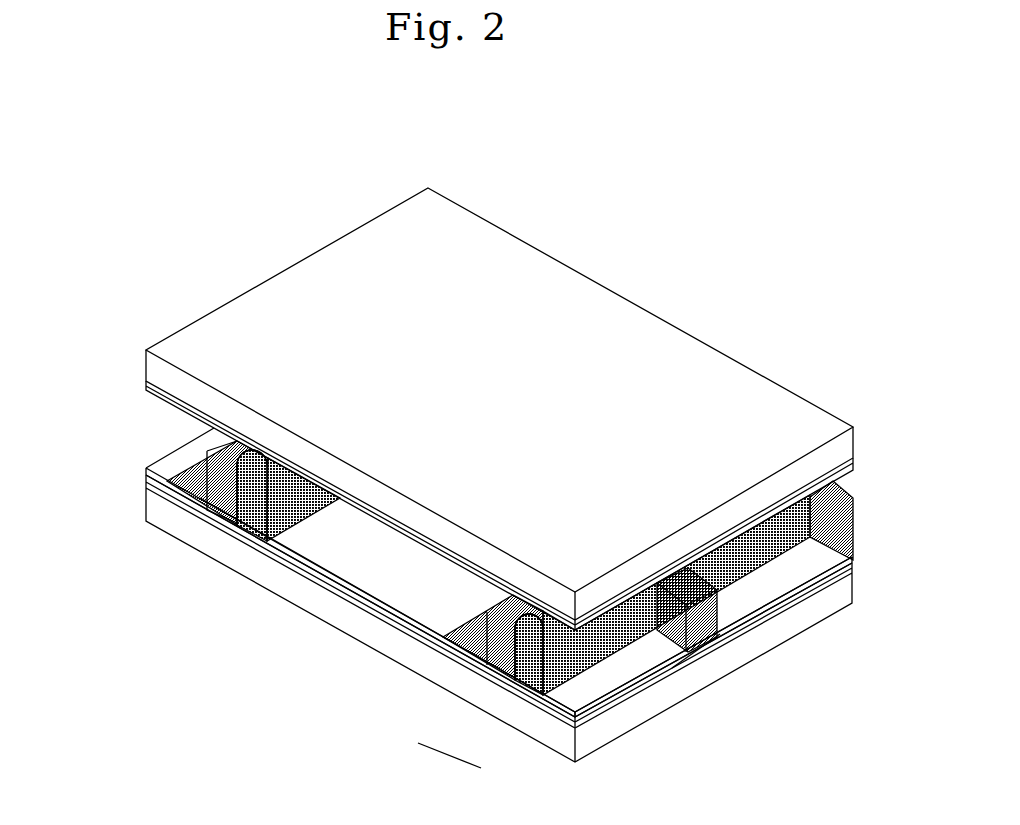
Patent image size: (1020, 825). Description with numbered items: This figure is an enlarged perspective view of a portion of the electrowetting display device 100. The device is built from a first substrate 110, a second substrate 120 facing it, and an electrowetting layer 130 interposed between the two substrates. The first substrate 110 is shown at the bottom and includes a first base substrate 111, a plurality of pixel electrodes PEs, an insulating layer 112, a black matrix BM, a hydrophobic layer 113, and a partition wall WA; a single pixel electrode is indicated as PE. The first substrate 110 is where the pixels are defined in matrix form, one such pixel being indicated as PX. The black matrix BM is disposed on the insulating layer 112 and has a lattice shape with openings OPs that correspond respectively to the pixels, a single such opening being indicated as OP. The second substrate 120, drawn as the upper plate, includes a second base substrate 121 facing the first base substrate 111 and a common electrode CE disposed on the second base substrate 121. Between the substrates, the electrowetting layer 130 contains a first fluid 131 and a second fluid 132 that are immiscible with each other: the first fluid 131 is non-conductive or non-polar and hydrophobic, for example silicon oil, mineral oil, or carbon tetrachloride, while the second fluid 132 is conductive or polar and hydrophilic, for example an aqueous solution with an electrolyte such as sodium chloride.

The electrowetting display device 100 is at (690, 165).
The second substrate 120 is at (82, 346).
The second base substrate 121 is at (145, 372).
The common electrode CE is at (145, 392).
The electrowetting layer 130 is at (82, 433).
The first fluid 131 is at (146, 487).
The second fluid 132 is at (172, 441).
The first substrate 110 is at (98, 572).
The first base substrate 111 is at (335, 612).
The insulating layer 112 is at (262, 548).
The hydrophobic layer 113 is at (405, 619).
The pixel electrode PE is at (312, 583).
The pixel electrodes PEs is at (820, 677).
The black matrix BM is at (215, 522).
The partition wall WA is at (193, 510).
The pixel PX is at (430, 597).
The opening OP is at (412, 645).
The openings OPs is at (486, 768).